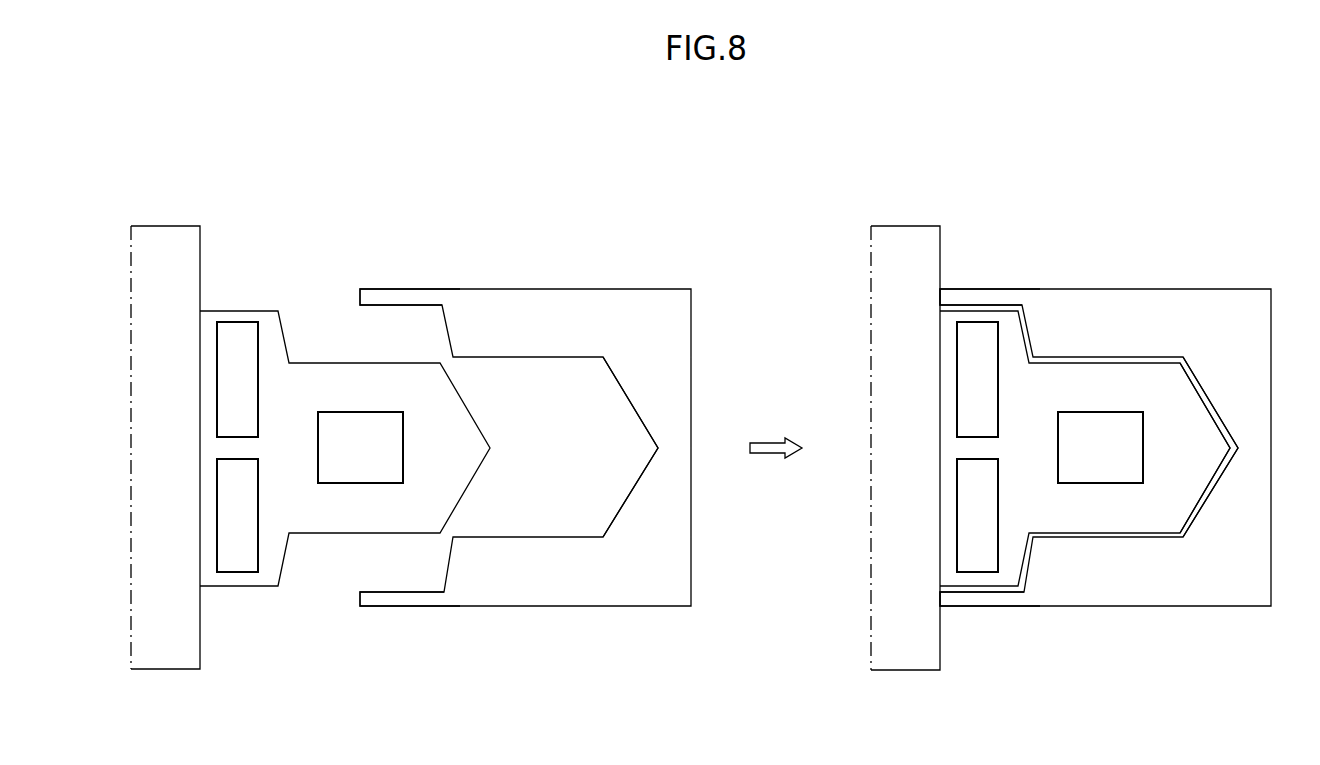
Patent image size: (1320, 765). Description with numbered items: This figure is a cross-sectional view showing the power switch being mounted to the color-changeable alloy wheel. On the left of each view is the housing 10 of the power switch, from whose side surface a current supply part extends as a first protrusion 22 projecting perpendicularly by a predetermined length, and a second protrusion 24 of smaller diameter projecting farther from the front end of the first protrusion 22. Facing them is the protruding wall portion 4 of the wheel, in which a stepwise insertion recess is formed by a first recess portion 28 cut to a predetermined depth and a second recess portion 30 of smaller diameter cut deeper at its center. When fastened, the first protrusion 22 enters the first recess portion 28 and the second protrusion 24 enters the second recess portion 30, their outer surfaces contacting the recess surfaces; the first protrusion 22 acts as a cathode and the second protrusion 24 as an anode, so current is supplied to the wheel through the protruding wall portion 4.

The protruding wall portion 4 is at (587, 312).
The housing 10 is at (163, 248).
The first protrusion 22 is at (231, 313).
The second protrusion 24 is at (319, 380).
The first recess portion 28 is at (407, 300).
The second recess portion 30 is at (622, 505).